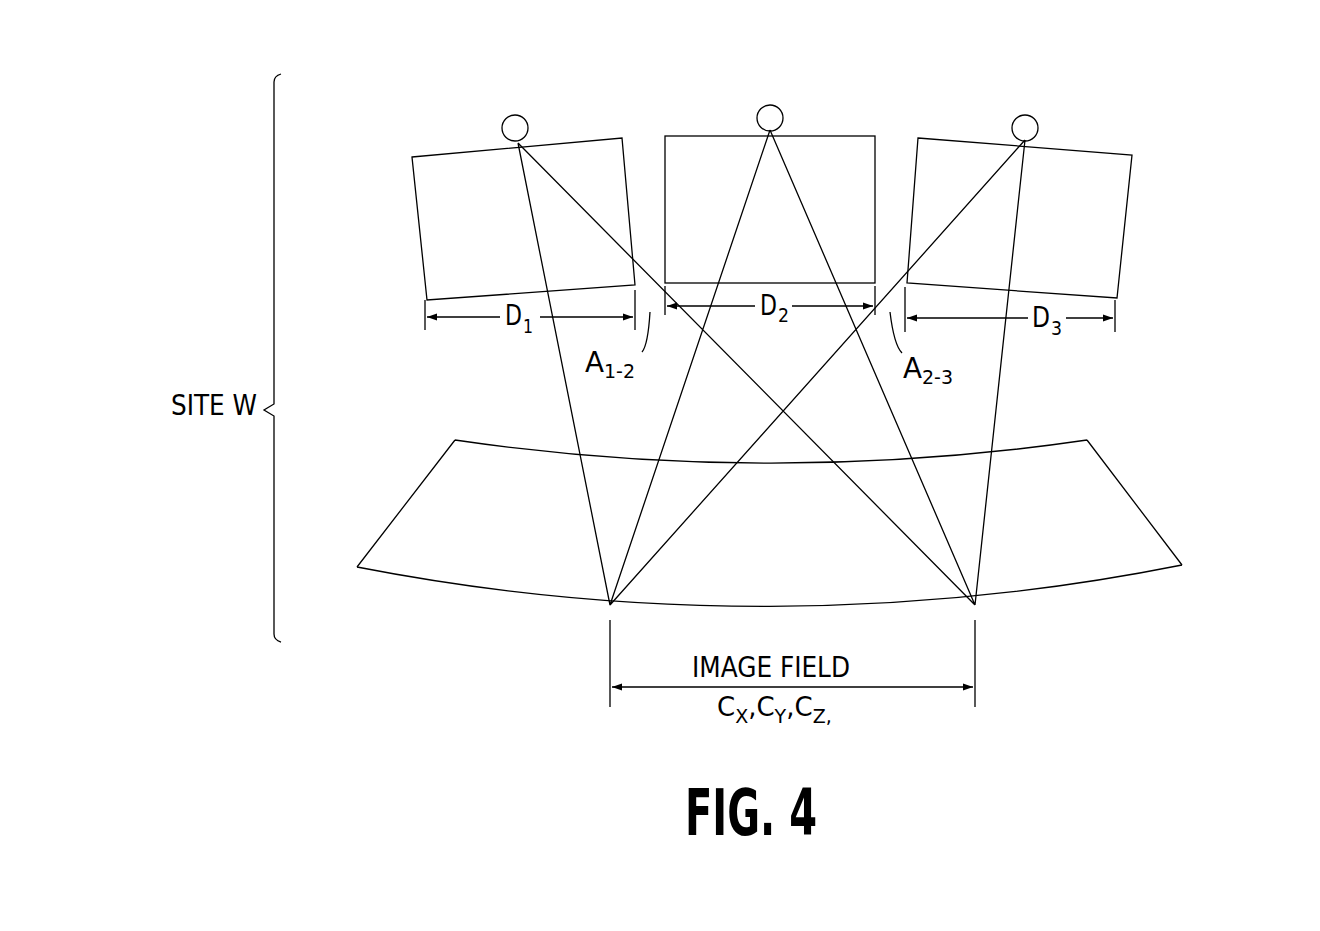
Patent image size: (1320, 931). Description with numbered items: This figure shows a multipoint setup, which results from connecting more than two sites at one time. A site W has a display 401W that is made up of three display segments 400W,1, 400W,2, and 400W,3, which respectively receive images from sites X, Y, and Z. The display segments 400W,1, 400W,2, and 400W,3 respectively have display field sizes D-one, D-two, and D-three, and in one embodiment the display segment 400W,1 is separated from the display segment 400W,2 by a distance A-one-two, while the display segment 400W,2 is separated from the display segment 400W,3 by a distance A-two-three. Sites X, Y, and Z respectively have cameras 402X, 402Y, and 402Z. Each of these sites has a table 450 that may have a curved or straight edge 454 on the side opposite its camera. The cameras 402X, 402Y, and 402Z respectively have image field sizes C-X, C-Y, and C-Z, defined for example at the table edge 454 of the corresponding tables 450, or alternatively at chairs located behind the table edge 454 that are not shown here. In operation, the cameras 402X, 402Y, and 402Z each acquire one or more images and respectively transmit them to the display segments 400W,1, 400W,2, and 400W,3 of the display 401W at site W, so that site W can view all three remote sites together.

The display segment 400W,1 is at (445, 163).
The display segment 400W,2 is at (695, 150).
The display segment 400W,3 is at (958, 152).
The camera 402X is at (523, 117).
The camera 402Y is at (780, 103).
The camera 402Z is at (1040, 112).
The display 401W is at (1166, 217).
The table 450 is at (796, 558).
The table edge 454 is at (497, 600).